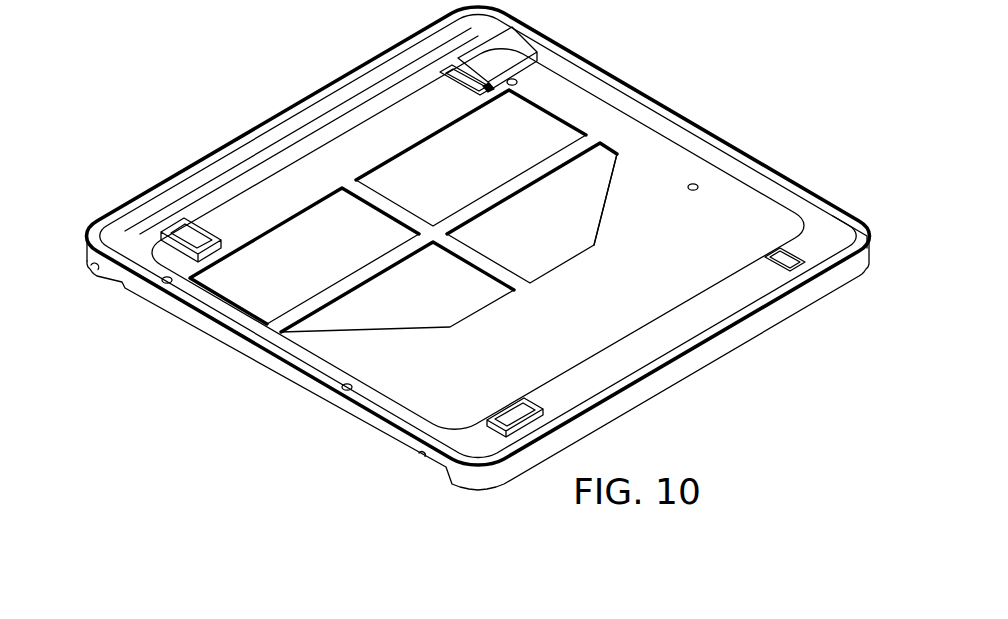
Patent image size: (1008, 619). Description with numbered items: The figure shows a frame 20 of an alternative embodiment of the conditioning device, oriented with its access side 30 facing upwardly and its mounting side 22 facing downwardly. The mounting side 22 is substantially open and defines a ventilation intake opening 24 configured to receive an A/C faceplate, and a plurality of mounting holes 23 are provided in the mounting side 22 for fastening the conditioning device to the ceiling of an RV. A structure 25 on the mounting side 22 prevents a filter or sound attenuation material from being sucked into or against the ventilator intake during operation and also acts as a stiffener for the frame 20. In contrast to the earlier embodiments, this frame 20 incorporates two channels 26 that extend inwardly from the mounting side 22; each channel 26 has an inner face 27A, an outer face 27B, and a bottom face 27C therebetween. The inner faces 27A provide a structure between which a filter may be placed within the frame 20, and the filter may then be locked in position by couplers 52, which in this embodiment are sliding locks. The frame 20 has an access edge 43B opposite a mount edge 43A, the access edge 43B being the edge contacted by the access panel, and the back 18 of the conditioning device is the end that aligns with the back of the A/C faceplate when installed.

The back 18 is at (714, 382).
The frame 20 is at (184, 131).
The mounting side 22 is at (739, 206).
The mounting holes 23 is at (352, 382).
The ventilation intake opening 24 is at (621, 196).
The structure 25 is at (548, 168).
The channels 26 is at (97, 293).
The inner faces 27A is at (273, 199).
The outer faces 27B is at (286, 140).
The bottom faces 27C is at (357, 114).
The access side 30 is at (697, 104).
The mount edge 43A is at (84, 261).
The access edge 43B is at (88, 221).
The couplers 52 is at (447, 69).